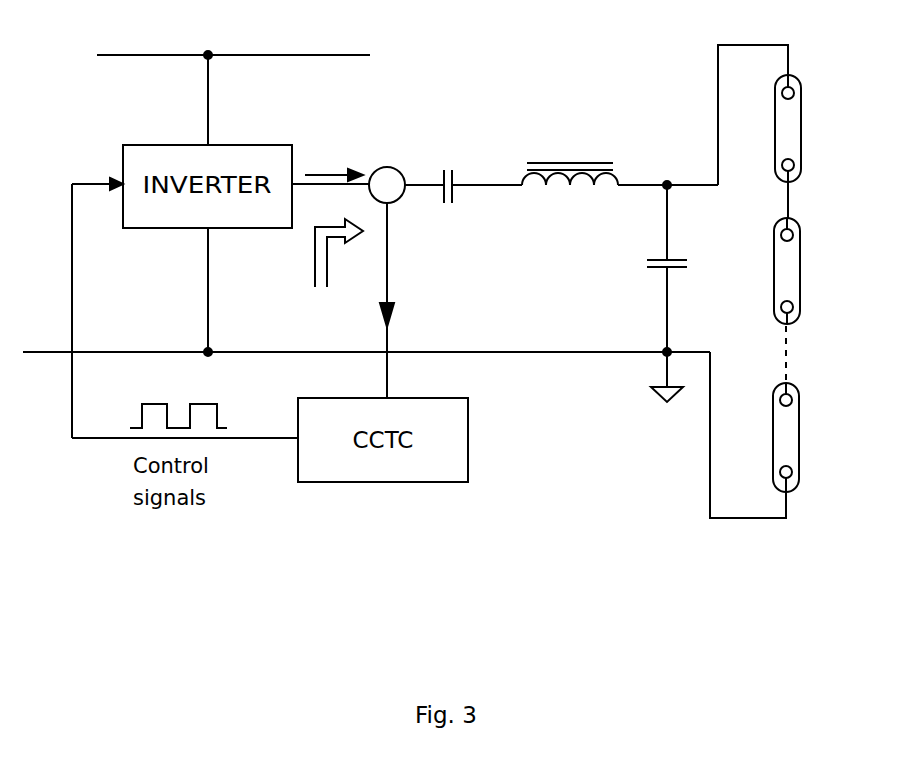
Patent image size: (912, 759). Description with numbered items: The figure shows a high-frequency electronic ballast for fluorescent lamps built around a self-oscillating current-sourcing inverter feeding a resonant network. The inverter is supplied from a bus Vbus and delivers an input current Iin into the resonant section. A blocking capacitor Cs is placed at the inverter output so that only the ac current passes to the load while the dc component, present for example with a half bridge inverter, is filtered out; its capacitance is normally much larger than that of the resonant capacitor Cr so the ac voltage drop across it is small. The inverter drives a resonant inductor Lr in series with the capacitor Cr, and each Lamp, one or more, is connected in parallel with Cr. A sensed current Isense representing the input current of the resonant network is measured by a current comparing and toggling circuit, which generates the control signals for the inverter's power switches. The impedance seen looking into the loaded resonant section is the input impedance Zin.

The bus voltage rail Vbus is at (233, 42).
The input current Iin is at (334, 161).
The blocking capacitor Cs is at (446, 170).
The inductor Lr is at (570, 159).
The capacitor Cr is at (679, 268).
The sensed current Isense is at (418, 300).
The input impedance Zin is at (334, 275).
The lamp Lamp is at (827, 283).